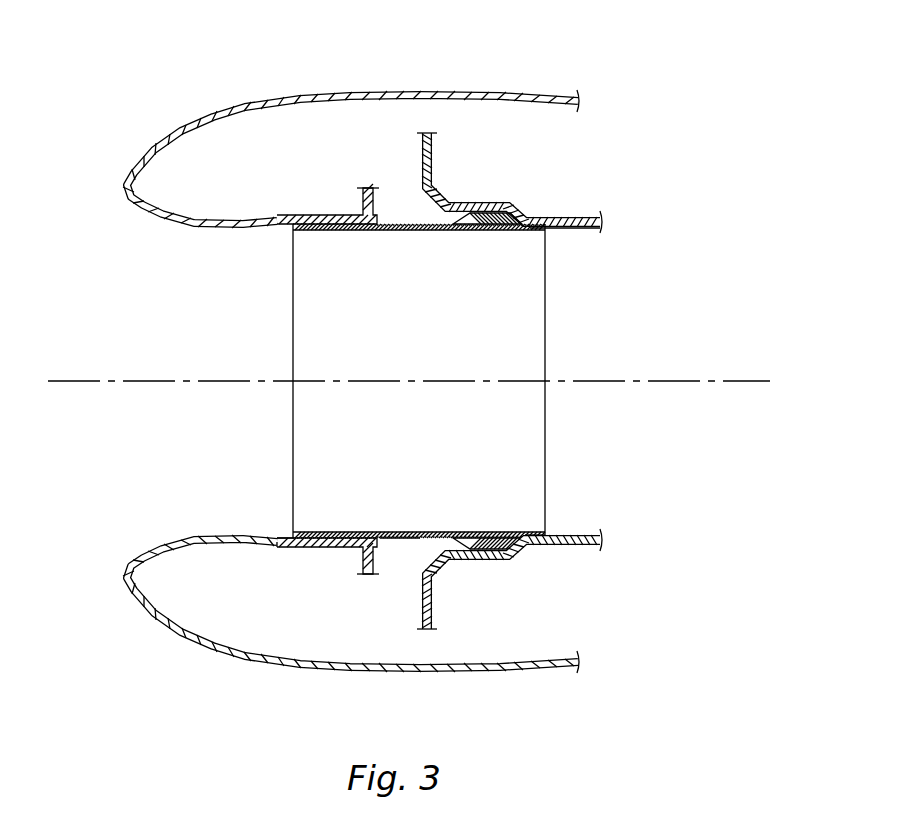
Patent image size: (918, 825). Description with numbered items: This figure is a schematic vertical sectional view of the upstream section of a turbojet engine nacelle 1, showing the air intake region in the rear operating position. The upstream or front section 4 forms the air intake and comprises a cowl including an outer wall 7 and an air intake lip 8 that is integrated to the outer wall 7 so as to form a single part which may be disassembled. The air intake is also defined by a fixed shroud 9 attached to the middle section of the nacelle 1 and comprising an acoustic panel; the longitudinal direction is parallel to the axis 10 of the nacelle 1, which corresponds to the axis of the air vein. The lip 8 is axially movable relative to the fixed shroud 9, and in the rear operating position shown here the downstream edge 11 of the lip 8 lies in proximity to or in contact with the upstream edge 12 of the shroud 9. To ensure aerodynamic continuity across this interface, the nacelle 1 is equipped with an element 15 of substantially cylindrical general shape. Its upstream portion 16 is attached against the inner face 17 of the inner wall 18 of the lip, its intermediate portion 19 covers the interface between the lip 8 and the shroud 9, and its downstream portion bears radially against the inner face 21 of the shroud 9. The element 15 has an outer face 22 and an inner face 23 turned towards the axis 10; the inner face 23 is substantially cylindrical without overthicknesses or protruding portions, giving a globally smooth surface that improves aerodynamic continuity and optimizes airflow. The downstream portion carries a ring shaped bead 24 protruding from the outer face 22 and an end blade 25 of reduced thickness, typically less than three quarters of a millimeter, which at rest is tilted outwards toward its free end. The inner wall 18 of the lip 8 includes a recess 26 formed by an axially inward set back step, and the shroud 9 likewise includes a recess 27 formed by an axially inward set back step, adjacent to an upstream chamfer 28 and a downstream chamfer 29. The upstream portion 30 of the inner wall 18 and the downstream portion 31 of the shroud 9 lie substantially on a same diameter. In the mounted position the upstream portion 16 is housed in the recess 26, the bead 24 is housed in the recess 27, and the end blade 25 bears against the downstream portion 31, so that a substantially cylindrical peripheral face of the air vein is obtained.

The nacelle 1 is at (133, 636).
The upstream or front section 4 is at (298, 91).
The outer wall 7 is at (480, 97).
The air intake lip 8 is at (160, 222).
The fixed shroud 9 is at (597, 206).
The axis 10 is at (82, 380).
The downstream edge 11 is at (363, 206).
The upstream edge 12 is at (432, 608).
The element 15 is at (549, 358).
The upstream portion 16 is at (318, 532).
The inner face 17 is at (290, 555).
The inner wall 18 is at (318, 553).
The intermediate portion 19 is at (413, 535).
The inner face 21 is at (586, 539).
The outer face 22 is at (430, 556).
The inner face 23 is at (390, 538).
The ring shaped bead 24 is at (480, 540).
The end blade 25 is at (530, 545).
The recess 26 is at (290, 530).
The recess 27 is at (510, 554).
The upstream chamfer 28 is at (432, 190).
The downstream chamfer 29 is at (522, 222).
The upstream portion 30 is at (207, 232).
The downstream portion 31 is at (580, 230).